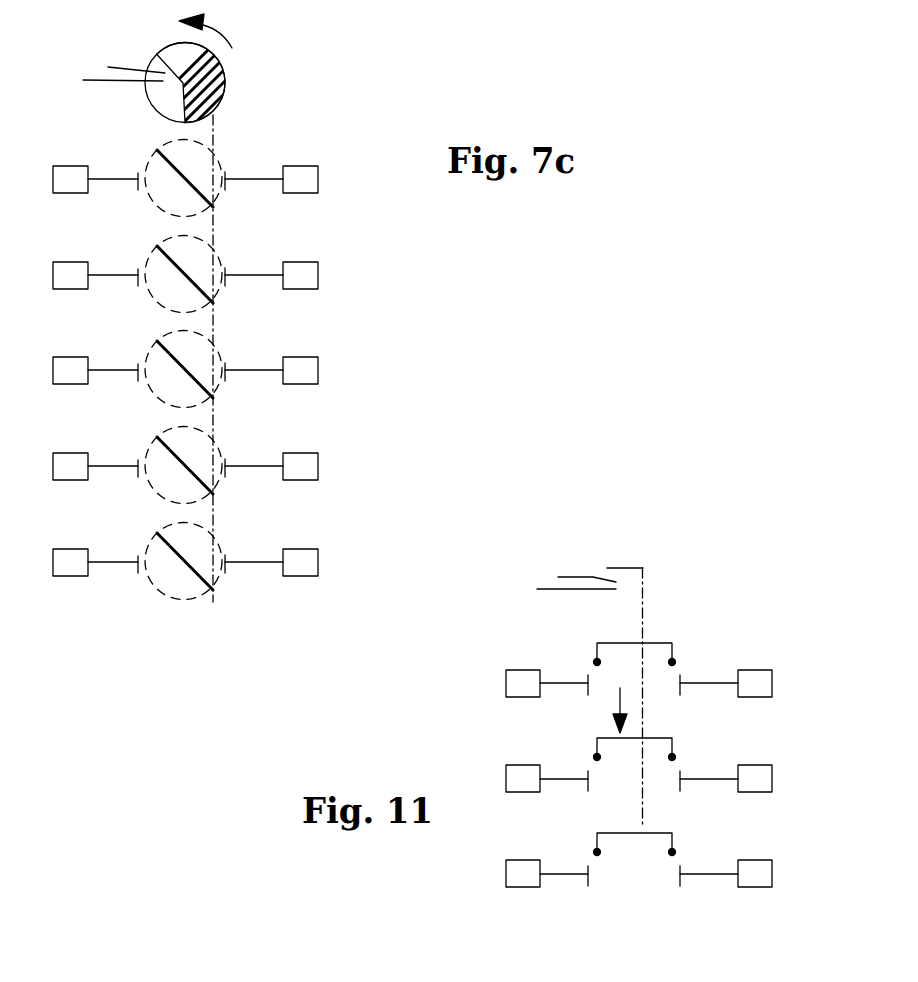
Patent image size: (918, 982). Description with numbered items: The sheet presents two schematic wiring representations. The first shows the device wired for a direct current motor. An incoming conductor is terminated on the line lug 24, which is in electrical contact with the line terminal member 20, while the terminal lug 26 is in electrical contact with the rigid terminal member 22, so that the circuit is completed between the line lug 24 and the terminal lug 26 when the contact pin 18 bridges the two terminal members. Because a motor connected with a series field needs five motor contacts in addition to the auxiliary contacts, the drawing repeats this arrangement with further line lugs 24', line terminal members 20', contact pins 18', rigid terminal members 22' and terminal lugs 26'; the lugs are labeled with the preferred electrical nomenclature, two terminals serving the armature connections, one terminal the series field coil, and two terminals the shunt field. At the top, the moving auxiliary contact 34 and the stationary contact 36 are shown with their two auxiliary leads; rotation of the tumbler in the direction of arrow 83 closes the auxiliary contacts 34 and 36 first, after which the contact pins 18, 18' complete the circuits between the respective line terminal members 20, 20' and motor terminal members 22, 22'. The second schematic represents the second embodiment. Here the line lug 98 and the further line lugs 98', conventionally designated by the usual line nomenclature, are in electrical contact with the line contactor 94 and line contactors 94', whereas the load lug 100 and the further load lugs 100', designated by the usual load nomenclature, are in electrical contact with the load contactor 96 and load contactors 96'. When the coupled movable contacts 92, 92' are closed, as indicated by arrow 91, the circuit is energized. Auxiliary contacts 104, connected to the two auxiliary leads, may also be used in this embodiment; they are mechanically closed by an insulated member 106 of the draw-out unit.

In FIG. 7C, the contact pin 18 is at (183, 178).
In FIG. 7C, the contact pin 18' is at (183, 418).
In FIG. 7C, the line terminal member 20 is at (122, 194).
In FIG. 7C, the line terminal member 20' is at (122, 434).
In FIG. 7C, the rigid terminal member 22 is at (243, 194).
In FIG. 7C, the rigid terminal member 22' is at (246, 433).
In FIG. 7C, the line lug 24 is at (80, 166).
In FIG. 7C, the line lug 24' is at (79, 405).
In FIG. 7C, the terminal lug 26 is at (282, 165).
In FIG. 7C, the terminal lug 26' is at (285, 405).
In FIG. 7C, the moving auxiliary contact 34 is at (126, 66).
In FIG. 7C, the stationary contact 36 is at (133, 84).
In FIG. 7C, the arrow 83 is at (211, 30).
In FIG. 11, the arrow 91 is at (620, 703).
In FIG. 11, the coupled movable contacts 92 is at (631, 638).
In FIG. 11, the coupled movable contacts 92' is at (641, 783).
In FIG. 11, the line contactor 94 is at (567, 674).
In FIG. 11, the line contactor 94' is at (567, 840).
In FIG. 11, the load contactor 96 is at (698, 674).
In FIG. 11, the load contactor 96' is at (702, 838).
In FIG. 11, the line lug 98 is at (537, 670).
In FIG. 11, the line lug 98' is at (535, 814).
In FIG. 11, the load lug 100 is at (743, 672).
In FIG. 11, the load lug 100' is at (750, 816).
In FIG. 11, the auxiliary contacts 104 is at (576, 577).
In FIG. 11, the insulated member 106 is at (620, 567).